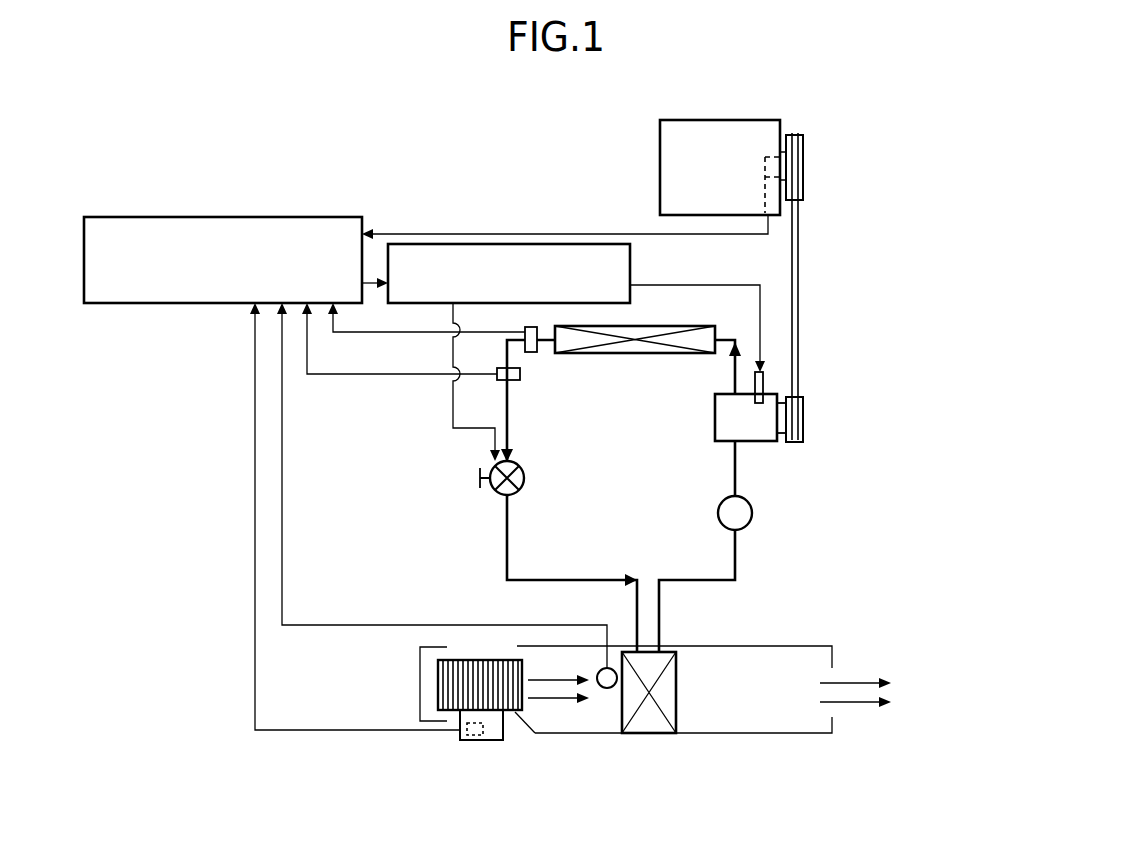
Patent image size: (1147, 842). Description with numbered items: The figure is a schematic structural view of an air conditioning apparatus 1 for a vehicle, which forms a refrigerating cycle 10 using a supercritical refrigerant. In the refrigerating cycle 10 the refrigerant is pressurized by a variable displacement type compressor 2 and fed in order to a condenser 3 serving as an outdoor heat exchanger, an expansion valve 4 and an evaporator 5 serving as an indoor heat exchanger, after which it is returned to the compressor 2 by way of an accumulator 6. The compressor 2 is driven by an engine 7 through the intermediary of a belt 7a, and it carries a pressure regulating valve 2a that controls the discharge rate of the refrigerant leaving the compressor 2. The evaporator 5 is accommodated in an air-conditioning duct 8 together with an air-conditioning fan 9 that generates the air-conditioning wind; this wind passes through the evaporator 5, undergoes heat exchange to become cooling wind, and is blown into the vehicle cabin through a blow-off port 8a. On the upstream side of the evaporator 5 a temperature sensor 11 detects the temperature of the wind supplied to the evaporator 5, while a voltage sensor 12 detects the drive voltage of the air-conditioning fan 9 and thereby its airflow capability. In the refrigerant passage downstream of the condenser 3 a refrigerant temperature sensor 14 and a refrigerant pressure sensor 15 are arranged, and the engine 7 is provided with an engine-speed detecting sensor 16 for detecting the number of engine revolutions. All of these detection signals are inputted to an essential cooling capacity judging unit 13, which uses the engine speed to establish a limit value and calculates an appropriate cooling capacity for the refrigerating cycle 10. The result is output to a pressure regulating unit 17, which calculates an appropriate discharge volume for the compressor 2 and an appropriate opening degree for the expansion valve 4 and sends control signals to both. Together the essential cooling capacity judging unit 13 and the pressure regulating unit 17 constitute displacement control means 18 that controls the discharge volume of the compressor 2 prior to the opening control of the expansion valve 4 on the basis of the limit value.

The air conditioning apparatus 1 is at (828, 565).
The variable displacement type compressor 2 is at (777, 443).
The pressure regulating valve 2a is at (766, 378).
The condenser 3 is at (648, 353).
The expansion valve 4 is at (525, 466).
The evaporator 5 is at (676, 680).
The accumulator 6 is at (752, 515).
The engine 7 is at (660, 150).
The belt 7a is at (803, 280).
The air-conditioning duct 8 is at (720, 735).
The blow-off port 8a is at (832, 708).
The air-conditioning fan 9 is at (460, 660).
The refrigerating cycle 10 is at (470, 516).
The temperature sensor 11 is at (607, 690).
The voltage sensor 12 is at (480, 737).
The essential cooling capacity judging unit 13 is at (352, 217).
The refrigerant temperature sensor 14 is at (532, 353).
The refrigerant pressure sensor 15 is at (520, 374).
The engine-speed detecting sensor 16 is at (773, 152).
The pressure regulating unit 17 is at (398, 244).
The displacement control means 18 is at (425, 149).